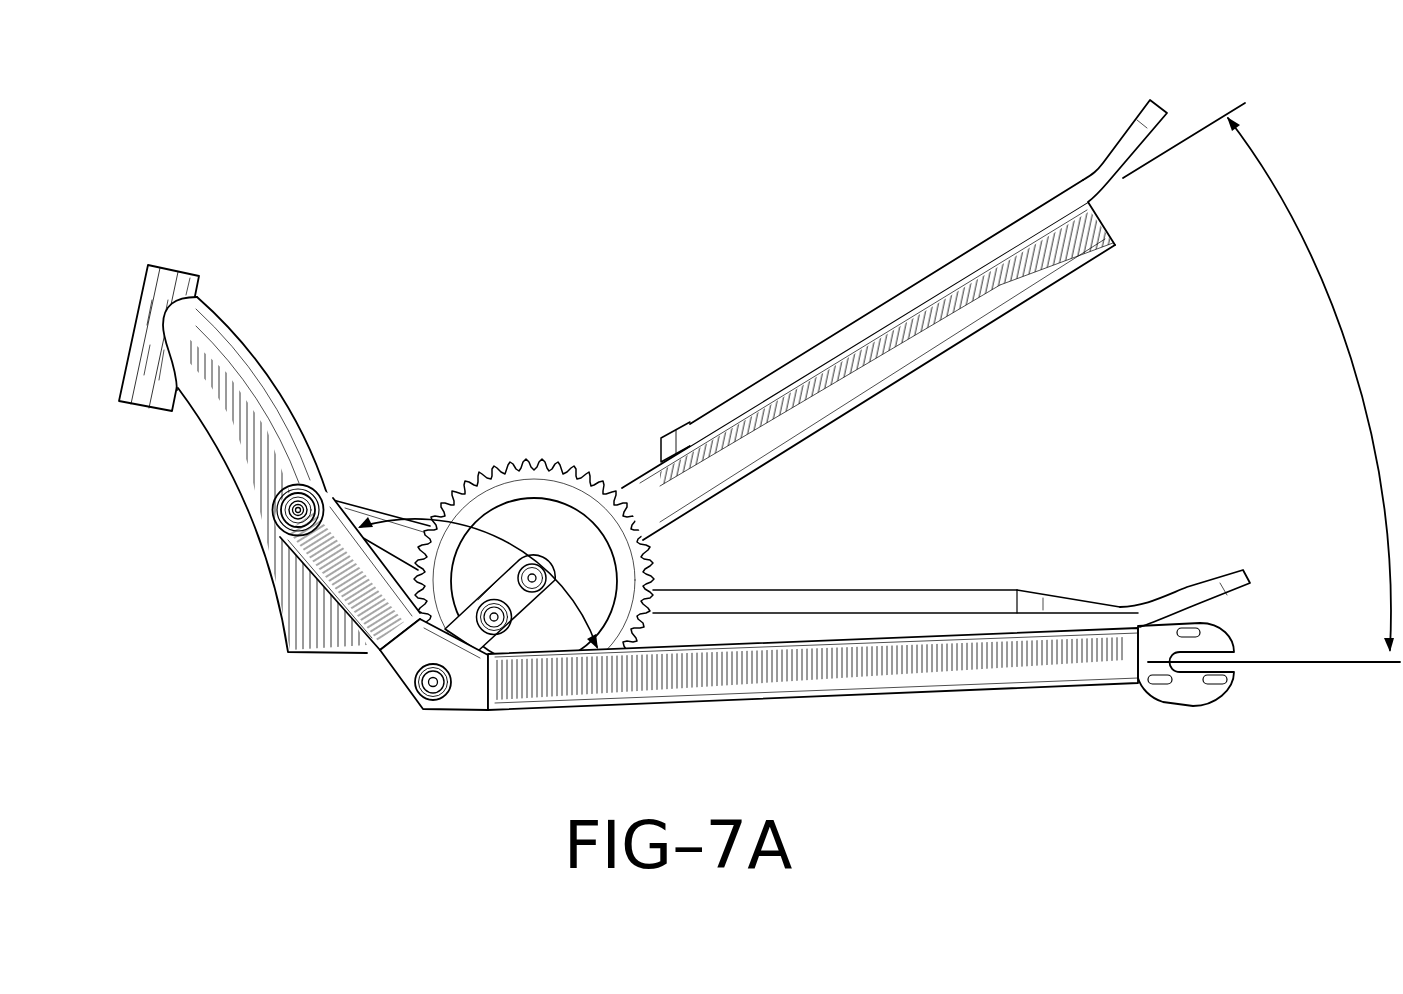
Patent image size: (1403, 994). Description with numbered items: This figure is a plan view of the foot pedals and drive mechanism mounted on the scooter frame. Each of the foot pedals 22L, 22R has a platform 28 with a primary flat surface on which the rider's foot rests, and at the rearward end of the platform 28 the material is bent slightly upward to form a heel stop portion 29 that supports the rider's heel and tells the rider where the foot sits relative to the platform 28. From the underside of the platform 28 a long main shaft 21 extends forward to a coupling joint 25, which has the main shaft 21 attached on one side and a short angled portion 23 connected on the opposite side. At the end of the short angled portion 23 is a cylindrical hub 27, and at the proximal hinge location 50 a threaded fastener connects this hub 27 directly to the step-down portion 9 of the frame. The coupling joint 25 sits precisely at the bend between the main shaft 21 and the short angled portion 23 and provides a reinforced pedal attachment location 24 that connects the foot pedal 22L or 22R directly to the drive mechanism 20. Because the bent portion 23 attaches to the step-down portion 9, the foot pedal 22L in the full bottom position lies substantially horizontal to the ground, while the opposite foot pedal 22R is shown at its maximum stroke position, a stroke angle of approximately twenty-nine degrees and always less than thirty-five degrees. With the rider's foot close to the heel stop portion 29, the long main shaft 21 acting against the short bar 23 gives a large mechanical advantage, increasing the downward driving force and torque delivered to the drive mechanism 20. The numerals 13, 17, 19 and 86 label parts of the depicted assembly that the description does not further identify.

The step-down portion 9 is at (258, 522).
The frame rail 13 is at (727, 592).
The wheel bracket 17 is at (1062, 598).
The handle 19 is at (140, 300).
The drive mechanism 20 is at (488, 472).
The long main shaft 21 is at (622, 484).
The foot pedal 22R is at (800, 355).
The foot pedal 22L is at (860, 622).
The short angled portion 23 is at (325, 585).
The pedal attachment location 24 is at (433, 683).
The coupling joint 25 is at (357, 503).
The cylindrical hub 27 is at (278, 488).
The platform 28 is at (925, 280).
The heel stop portion 29 is at (1117, 140).
The proximal hinge location 50 is at (297, 514).
The bracket 86 is at (417, 693).